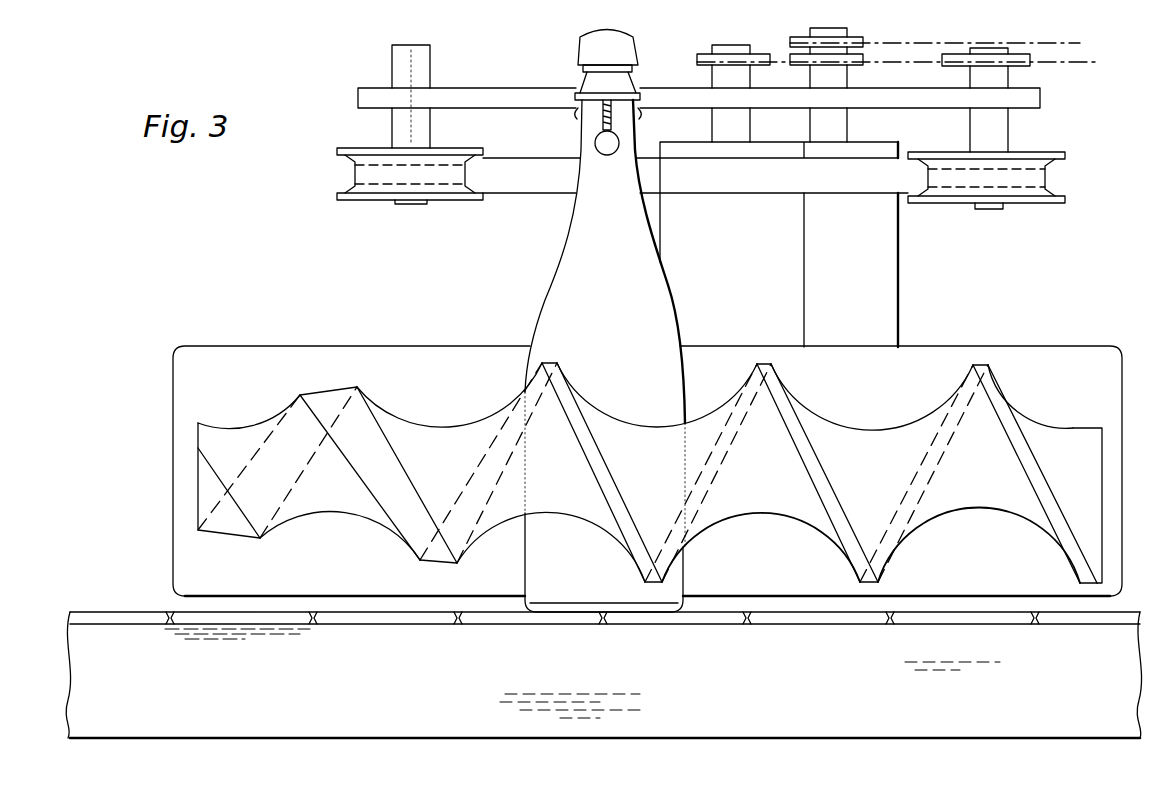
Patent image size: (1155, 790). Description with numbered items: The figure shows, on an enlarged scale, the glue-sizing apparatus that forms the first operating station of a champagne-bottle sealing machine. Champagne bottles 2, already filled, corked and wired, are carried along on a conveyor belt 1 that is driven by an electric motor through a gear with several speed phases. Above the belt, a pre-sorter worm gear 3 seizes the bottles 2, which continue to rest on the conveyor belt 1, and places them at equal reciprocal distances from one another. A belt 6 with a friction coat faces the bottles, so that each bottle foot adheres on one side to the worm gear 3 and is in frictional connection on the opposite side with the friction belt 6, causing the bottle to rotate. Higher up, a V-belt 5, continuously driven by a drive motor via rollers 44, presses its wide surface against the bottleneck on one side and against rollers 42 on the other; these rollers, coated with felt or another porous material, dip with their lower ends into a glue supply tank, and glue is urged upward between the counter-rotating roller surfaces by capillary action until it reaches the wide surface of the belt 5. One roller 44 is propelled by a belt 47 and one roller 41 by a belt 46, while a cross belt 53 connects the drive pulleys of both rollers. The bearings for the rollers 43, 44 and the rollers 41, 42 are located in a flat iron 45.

The conveyor belt 1 is at (1130, 618).
The champagne bottles 2 is at (550, 317).
The pre-sorter worm gear 3 is at (1073, 437).
The V-belt 5 is at (528, 181).
The belt 6 is at (1012, 368).
The roller 41 is at (887, 313).
The roller 42 is at (779, 278).
The roller 43 is at (371, 199).
The roller 44 is at (1066, 204).
The flat iron 45 is at (1032, 100).
The belt 46 is at (1080, 43).
The belt 47 is at (1073, 62).
The cross belt 53 is at (697, 60).